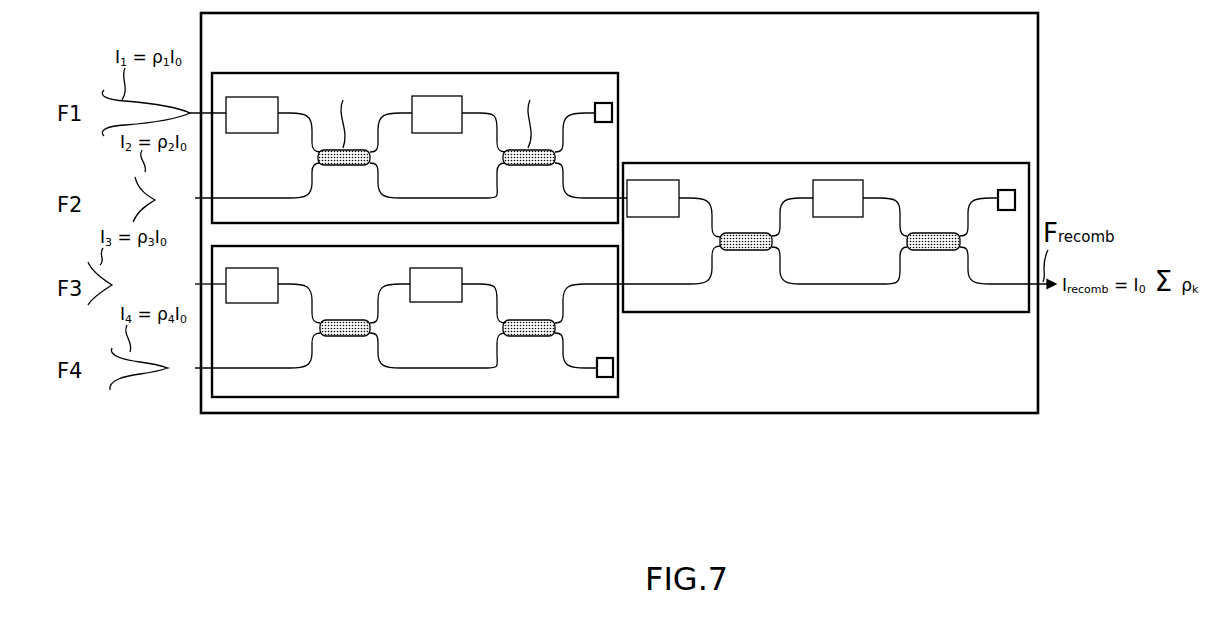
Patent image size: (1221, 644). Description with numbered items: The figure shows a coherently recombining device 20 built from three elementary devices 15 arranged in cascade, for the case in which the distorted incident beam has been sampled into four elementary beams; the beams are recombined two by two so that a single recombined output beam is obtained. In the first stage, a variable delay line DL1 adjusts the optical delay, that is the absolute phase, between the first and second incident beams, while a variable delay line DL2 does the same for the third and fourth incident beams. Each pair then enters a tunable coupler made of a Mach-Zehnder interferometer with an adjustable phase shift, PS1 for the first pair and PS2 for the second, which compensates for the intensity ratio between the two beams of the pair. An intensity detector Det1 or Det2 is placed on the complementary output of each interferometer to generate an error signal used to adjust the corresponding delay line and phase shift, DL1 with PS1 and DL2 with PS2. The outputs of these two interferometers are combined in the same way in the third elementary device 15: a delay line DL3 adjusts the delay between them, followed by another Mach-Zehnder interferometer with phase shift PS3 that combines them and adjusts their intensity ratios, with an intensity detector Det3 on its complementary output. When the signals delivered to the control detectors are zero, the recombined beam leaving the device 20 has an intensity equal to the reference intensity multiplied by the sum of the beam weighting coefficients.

The elementary device 15 is at (634, 239).
The coherently recombining device 20 is at (748, 414).
The variable delay line DL1 is at (252, 115).
The variable delay line DL2 is at (252, 285).
The delay line DL3 is at (653, 198).
The adjustable phase shift PS1 is at (437, 114).
The adjustable phase shift PS2 is at (436, 285).
The adjustable phase shift PS3 is at (838, 198).
The intensity detector Det1 is at (612, 103).
The intensity detector Det2 is at (597, 377).
The intensity detector Det3 is at (1005, 190).